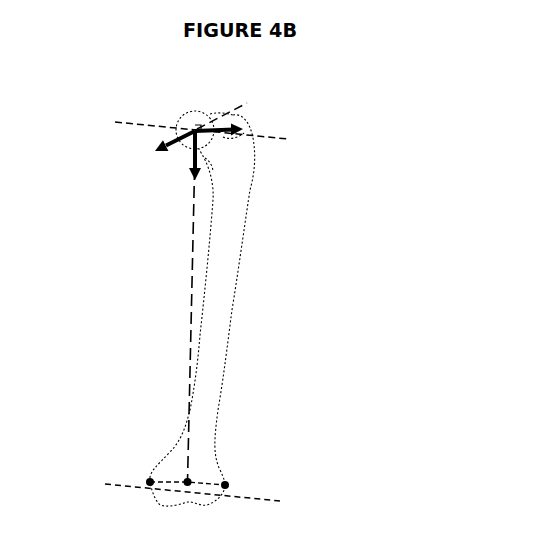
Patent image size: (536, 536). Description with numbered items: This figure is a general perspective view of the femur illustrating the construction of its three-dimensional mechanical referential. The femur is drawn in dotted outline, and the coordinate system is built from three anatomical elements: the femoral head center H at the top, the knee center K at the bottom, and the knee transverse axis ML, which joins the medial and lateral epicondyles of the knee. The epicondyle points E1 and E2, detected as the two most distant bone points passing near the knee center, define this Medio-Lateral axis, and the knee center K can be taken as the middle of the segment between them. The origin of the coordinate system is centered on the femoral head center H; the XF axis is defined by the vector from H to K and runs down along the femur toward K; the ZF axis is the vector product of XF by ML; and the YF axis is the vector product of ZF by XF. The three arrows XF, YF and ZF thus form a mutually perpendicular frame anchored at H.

The femoral head center H is at (190, 127).
The YF axis YF is at (225, 127).
The ZF axis ZF is at (165, 144).
The XF axis XF is at (185, 158).
The epicondyle point E1 is at (138, 474).
The epicondyle point E2 is at (233, 478).
The knee center K is at (183, 474).
The knee transverse axis ML is at (205, 497).